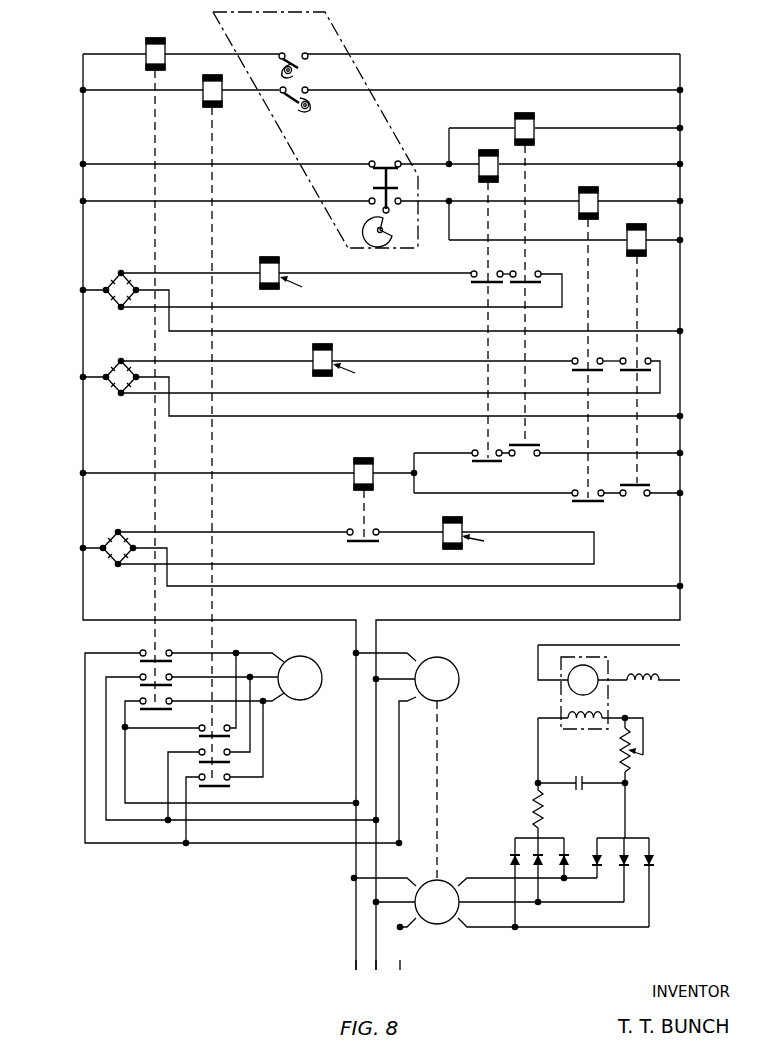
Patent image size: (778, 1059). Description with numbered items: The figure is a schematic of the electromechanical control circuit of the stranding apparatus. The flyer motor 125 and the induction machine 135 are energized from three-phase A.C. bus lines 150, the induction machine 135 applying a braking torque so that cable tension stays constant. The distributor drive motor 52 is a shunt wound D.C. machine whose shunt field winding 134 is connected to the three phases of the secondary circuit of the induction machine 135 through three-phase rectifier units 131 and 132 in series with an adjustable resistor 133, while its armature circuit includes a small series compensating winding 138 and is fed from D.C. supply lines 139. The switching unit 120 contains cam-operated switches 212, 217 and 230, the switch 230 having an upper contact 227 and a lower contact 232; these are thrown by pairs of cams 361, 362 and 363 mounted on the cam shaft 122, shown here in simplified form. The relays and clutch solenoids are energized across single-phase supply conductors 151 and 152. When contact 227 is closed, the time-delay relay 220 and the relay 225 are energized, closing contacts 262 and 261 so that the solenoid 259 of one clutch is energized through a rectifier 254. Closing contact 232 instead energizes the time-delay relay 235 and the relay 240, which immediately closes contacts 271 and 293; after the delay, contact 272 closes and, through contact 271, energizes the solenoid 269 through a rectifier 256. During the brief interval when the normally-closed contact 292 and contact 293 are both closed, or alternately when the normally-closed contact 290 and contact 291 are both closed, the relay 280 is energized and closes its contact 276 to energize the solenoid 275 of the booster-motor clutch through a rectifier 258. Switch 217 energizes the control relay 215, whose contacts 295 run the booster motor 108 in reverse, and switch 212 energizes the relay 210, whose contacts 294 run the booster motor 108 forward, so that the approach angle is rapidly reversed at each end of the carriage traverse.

The distributor drive motor 52 is at (610, 663).
The booster motor 108 is at (318, 648).
The switching unit 120 is at (336, 27).
The cam shaft 122 is at (318, 131).
The flyer motor 125 is at (443, 655).
The three-phase rectifier unit 131 is at (511, 848).
The three-phase rectifier unit 132 is at (654, 847).
The adjustable resistor 133 is at (633, 760).
The shunt field winding 134 is at (568, 724).
The induction machine 135 is at (428, 926).
The series compensating winding 138 is at (642, 688).
The D.C. supply lines 139 is at (680, 680).
The three-phase A.C. bus lines 150 is at (388, 986).
The single-phase A.C. supply conductor 151 is at (83, 74).
The single-phase A.C. supply conductor 152 is at (682, 149).
The relay 210 is at (165, 50).
The cam-operated switch 212 is at (282, 53).
The control relay 215 is at (203, 88).
The cam-operated switch 217 is at (281, 93).
The time-delay relay 220 is at (535, 128).
The control relay 225 is at (479, 152).
The upper contact 227 is at (386, 161).
The cam-operated switch 230 is at (400, 180).
The lower contact 232 is at (373, 188).
The time-delay relay 235 is at (627, 240).
The control relay 240 is at (598, 196).
The rectifier 254 is at (118, 278).
The rectifier 256 is at (113, 364).
The rectifier 258 is at (113, 530).
The solenoid 259 is at (280, 268).
The first contact of relay 225 261 is at (474, 282).
The first contact of relay 220 262 is at (522, 282).
The solenoid 269 is at (333, 356).
The first contact of relay 240 271 is at (585, 374).
The first contact of relay 235 272 is at (633, 375).
The solenoid 275 is at (462, 523).
The contact of relay 280 276 is at (358, 545).
The relay 280 is at (354, 466).
The normally-closed contact of relay 220 290 is at (521, 443).
The second contact of relay 225 291 is at (492, 464).
The normally-closed contact of relay 235 292 is at (630, 486).
The second contact of relay 240 293 is at (588, 503).
The contacts of relay 210 294 is at (166, 660).
The contacts of relay 215 295 is at (203, 732).
The cams 361 is at (293, 71).
The cams 362 is at (303, 108).
The cams 363 is at (370, 245).